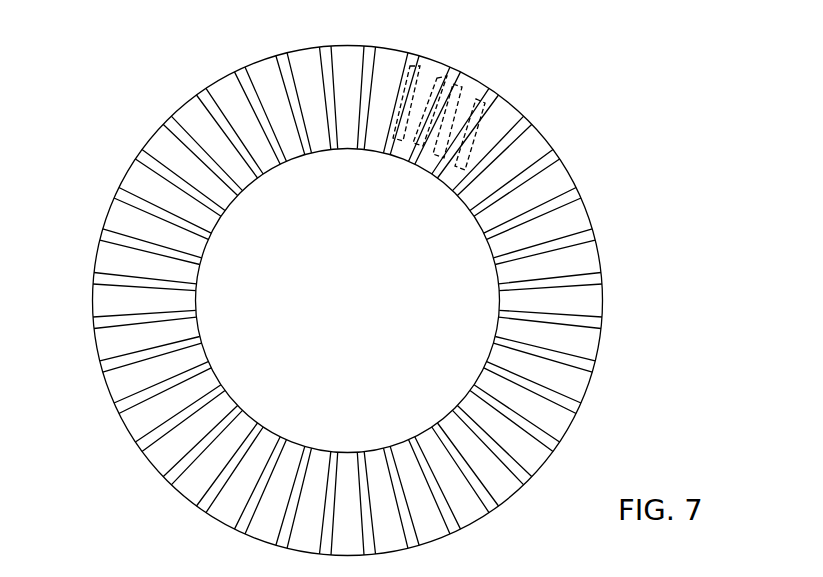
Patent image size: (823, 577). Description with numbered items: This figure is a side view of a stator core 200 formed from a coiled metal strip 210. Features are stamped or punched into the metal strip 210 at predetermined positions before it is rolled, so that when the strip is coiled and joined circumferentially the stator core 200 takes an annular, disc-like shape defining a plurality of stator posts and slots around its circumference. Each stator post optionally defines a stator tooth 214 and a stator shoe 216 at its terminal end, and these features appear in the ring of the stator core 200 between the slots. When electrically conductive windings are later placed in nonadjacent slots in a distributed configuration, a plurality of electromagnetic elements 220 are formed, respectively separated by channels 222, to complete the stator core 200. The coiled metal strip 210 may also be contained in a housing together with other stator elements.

The stator core 200 is at (119, 99).
The metal strip 210 is at (403, 153).
The stator tooth 214 is at (468, 93).
The stator shoe 216 is at (433, 66).
The electromagnetic elements 220 is at (536, 146).
The channels 222 is at (598, 281).